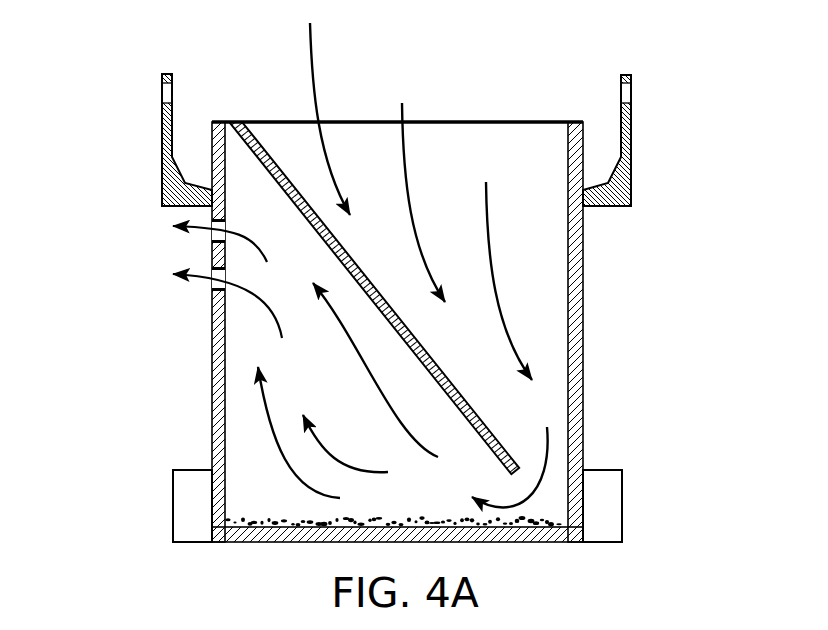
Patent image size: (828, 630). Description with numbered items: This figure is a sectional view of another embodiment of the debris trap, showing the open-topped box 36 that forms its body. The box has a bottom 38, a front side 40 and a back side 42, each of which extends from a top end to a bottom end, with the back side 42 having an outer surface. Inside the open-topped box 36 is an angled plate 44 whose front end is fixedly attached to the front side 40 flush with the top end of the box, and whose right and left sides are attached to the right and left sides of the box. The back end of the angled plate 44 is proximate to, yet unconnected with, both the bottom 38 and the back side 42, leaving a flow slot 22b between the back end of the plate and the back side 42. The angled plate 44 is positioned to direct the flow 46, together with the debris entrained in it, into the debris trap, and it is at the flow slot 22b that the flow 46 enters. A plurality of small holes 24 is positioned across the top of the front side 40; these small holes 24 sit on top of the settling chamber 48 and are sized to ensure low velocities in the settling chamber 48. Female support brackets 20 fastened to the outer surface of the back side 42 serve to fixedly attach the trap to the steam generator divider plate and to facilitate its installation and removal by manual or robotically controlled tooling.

The female support brackets 20 is at (162, 113).
The flow slot 22b is at (542, 543).
The small holes 24 is at (210, 235).
The open-topped box 36 is at (272, 113).
The bottom 38 is at (283, 545).
The front side 40 is at (217, 121).
The back side 42 is at (583, 290).
The angled plate 44 is at (362, 265).
The flow 46 is at (317, 107).
The settling chamber 48 is at (227, 400).